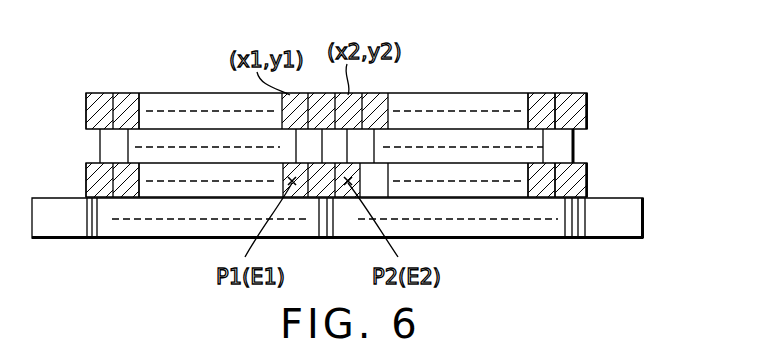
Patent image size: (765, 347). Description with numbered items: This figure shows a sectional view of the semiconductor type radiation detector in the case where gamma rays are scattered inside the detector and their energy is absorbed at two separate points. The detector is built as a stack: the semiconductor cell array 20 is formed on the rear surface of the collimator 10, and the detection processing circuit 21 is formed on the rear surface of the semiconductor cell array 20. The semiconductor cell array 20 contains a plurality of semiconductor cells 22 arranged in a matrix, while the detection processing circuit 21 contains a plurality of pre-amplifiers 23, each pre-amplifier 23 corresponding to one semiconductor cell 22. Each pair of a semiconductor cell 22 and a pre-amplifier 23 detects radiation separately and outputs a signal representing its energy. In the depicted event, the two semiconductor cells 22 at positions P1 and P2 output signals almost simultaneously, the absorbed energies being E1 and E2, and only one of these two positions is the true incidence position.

The collimator 10 is at (633, 218).
The semiconductor cell array 20 is at (588, 182).
The detection processing circuit 21 is at (588, 107).
The semiconductor cell 22 is at (98, 182).
The pre-amplifier 23 is at (101, 94).